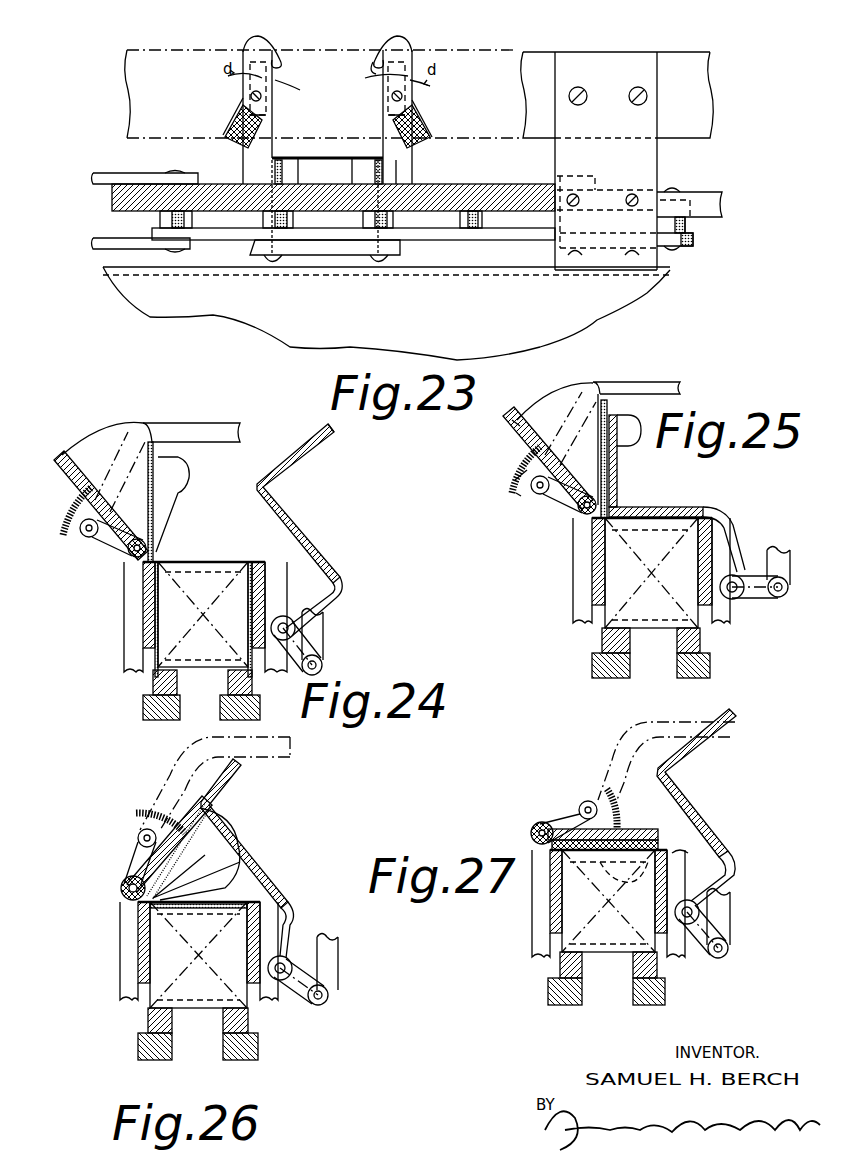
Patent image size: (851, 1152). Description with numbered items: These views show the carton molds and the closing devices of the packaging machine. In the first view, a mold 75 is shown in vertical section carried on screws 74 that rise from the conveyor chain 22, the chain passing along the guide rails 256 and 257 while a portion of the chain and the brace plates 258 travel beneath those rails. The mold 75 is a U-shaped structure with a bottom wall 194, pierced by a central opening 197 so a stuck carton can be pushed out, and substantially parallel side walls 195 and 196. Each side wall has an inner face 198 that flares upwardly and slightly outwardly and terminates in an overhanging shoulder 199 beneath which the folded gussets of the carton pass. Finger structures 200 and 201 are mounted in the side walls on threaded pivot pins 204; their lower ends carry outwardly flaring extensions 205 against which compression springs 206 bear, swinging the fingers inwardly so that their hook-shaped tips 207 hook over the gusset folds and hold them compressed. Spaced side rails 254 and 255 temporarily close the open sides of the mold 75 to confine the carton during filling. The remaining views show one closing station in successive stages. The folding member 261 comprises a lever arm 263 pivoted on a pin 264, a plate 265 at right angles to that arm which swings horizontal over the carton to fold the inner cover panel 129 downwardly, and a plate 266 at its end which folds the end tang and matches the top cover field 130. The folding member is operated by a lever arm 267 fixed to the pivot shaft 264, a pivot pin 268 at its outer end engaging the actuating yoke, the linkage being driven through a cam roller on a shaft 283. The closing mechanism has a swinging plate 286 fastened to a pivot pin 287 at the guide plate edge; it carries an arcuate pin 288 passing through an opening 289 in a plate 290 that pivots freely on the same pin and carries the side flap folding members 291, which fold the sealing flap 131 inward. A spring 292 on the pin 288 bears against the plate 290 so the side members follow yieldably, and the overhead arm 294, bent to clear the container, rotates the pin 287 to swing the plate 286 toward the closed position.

In FIG. 23, the chain 22 is at (215, 250).
In FIG. 23, the screws 74 is at (270, 258).
In FIG. 23, the molds 75 is at (462, 52).
In FIG. 24, the molds 75 is at (155, 682).
In FIG. 25, the molds 75 is at (692, 644).
In FIG. 26, the inner cover panel 129 is at (245, 892).
In FIG. 24, the top cover field 130 is at (166, 483).
In FIG. 25, the sealing flap 131 is at (625, 425).
In FIG. 23, the bottom wall 194 is at (283, 165).
In FIG. 23, the side wall 195 is at (400, 160).
In FIG. 23, the side wall 196 is at (252, 148).
In FIG. 23, the central opening 197 is at (335, 165).
In FIG. 23, the inner face 198 is at (268, 112).
In FIG. 23, the overhanging shoulder 199 is at (265, 62).
In FIG. 23, the finger structure 200 is at (400, 40).
In FIG. 23, the finger structure 201 is at (254, 44).
In FIG. 23, the threaded pivot pin 204 is at (405, 95).
In FIG. 23, the outwardly flaring extension 205 is at (424, 122).
In FIG. 23, the compression spring 206 is at (418, 140).
In FIG. 23, the hook-shaped tip 207 is at (372, 70).
In FIG. 24, the side rail 254 is at (255, 580).
In FIG. 25, the side rail 254 is at (702, 570).
In FIG. 27, the side rail 254 is at (660, 905).
In FIG. 24, the side rail 255 is at (143, 595).
In FIG. 25, the side rail 255 is at (598, 573).
In FIG. 27, the side rail 255 is at (557, 905).
In FIG. 24, the guide rail 256 is at (150, 718).
In FIG. 24, the guide rail 257 is at (258, 712).
In FIG. 23, the brace plates 258 is at (335, 255).
In FIG. 24, the folding member 261 is at (310, 437).
In FIG. 24, the lever arm 263 is at (325, 592).
In FIG. 24, the pivot pin 264 is at (270, 628).
In FIG. 25, the pivot pin 264 is at (735, 597).
In FIG. 26, the pivot pin 264 is at (282, 980).
In FIG. 27, the pivot pin 264 is at (685, 925).
In FIG. 24, the plate 265 is at (290, 500).
In FIG. 25, the plate 265 is at (680, 510).
In FIG. 26, the plate 265 is at (262, 870).
In FIG. 27, the plate 265 is at (715, 823).
In FIG. 25, the plate 266 is at (617, 465).
In FIG. 26, the plate 266 is at (235, 785).
In FIG. 27, the plate 266 is at (702, 750).
In FIG. 24, the lever arm 267 is at (318, 628).
In FIG. 25, the lever arm 267 is at (742, 575).
In FIG. 26, the lever arm 267 is at (330, 962).
In FIG. 27, the lever arm 267 is at (727, 914).
In FIG. 24, the pivot pin 268 is at (322, 663).
In FIG. 25, the pivot pin 268 is at (778, 595).
In FIG. 26, the pivot pin 268 is at (328, 1000).
In FIG. 27, the pivot pin 268 is at (728, 948).
In FIG. 24, the shaft 283 is at (108, 540).
In FIG. 25, the shaft 283 is at (565, 495).
In FIG. 26, the shaft 283 is at (138, 858).
In FIG. 27, the shaft 283 is at (570, 816).
In FIG. 24, the swinging plate 286 is at (72, 455).
In FIG. 25, the swinging plate 286 is at (518, 415).
In FIG. 26, the swinging plate 286 is at (195, 795).
In FIG. 27, the swinging plate 286 is at (672, 822).
In FIG. 24, the pivot pin 287 is at (128, 556).
In FIG. 25, the pivot pin 287 is at (580, 512).
In FIG. 26, the pivot pin 287 is at (118, 888).
In FIG. 27, the pivot pin 287 is at (530, 826).
In FIG. 25, the arcuate pin 288 is at (517, 477).
In FIG. 25, the opening 289 is at (530, 442).
In FIG. 24, the plate 290 is at (85, 480).
In FIG. 25, the plate 290 is at (515, 420).
In FIG. 26, the plate 290 is at (178, 815).
In FIG. 27, the plate 290 is at (630, 830).
In FIG. 24, the side flap folding member 291 is at (100, 430).
In FIG. 25, the side flap folding member 291 is at (550, 395).
In FIG. 25, the spring 292 is at (514, 487).
In FIG. 24, the overhead arm 294 is at (173, 425).
In FIG. 25, the overhead arm 294 is at (640, 393).
In FIG. 26, the overhead arm 294 is at (292, 747).
In FIG. 27, the overhead arm 294 is at (615, 765).